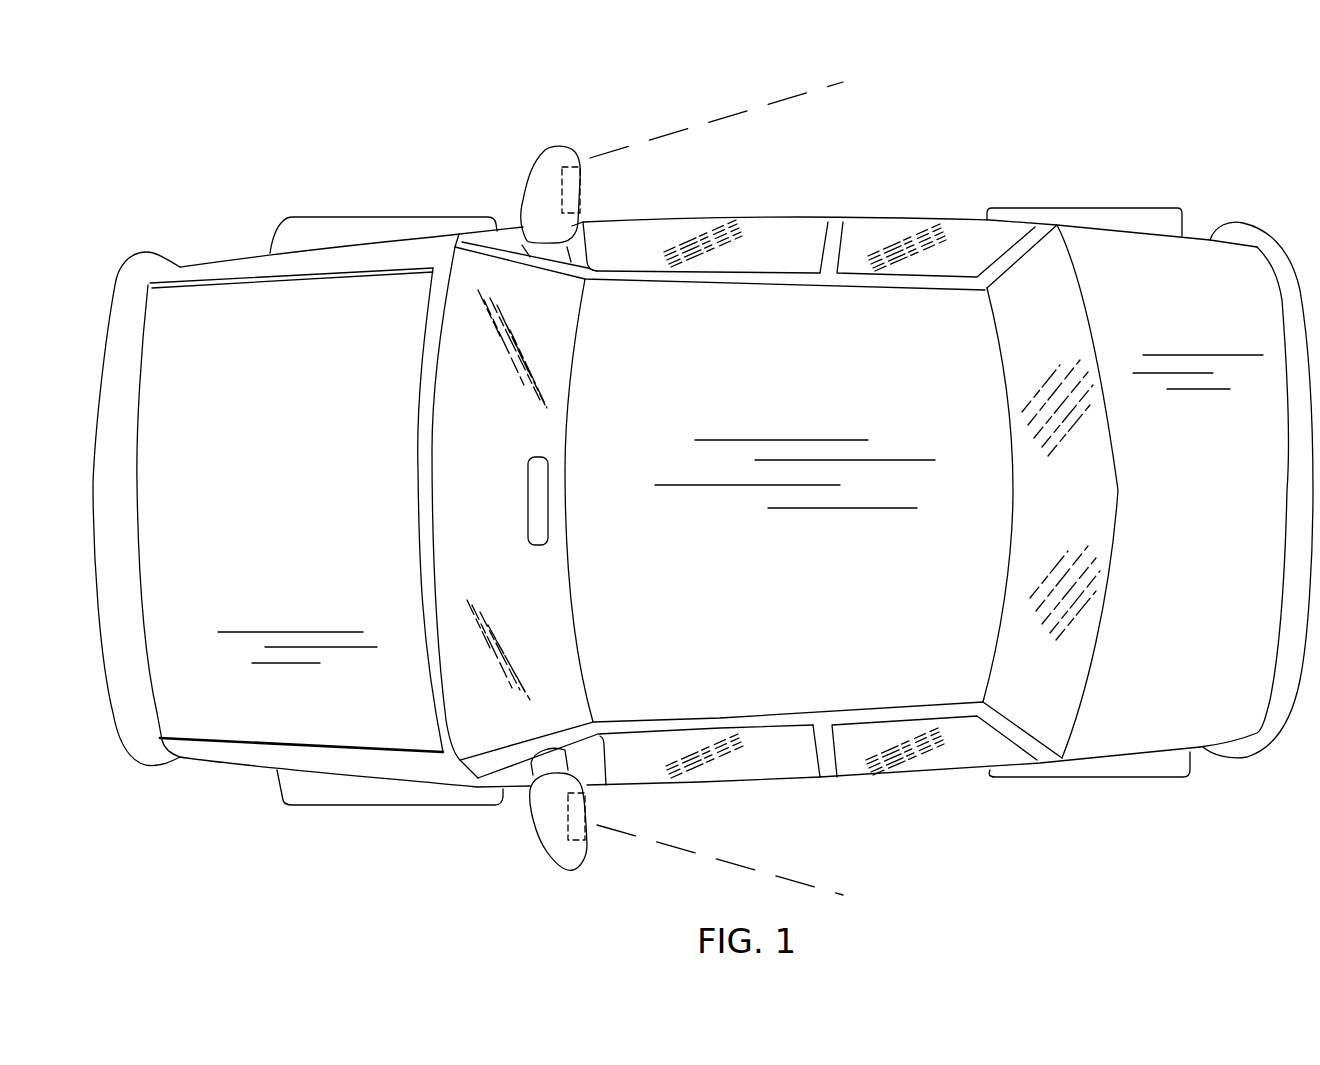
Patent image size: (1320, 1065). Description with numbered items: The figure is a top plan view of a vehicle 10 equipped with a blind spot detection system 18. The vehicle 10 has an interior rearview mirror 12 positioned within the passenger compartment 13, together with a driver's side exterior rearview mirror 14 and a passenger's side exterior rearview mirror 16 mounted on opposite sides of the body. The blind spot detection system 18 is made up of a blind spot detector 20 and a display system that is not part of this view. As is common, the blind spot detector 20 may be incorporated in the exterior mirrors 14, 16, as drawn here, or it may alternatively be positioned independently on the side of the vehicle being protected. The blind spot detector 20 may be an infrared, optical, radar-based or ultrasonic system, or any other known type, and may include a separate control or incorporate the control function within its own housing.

The vehicle 10 is at (800, 212).
The interior rearview mirror 12 is at (547, 472).
The passenger compartment 13 is at (484, 415).
The driver's side exterior rearview mirror 14 is at (550, 857).
The passenger's side exterior rearview mirror 16 is at (555, 148).
The blind spot detection system 18 is at (710, 581).
The blind spot detector 20 is at (577, 155).